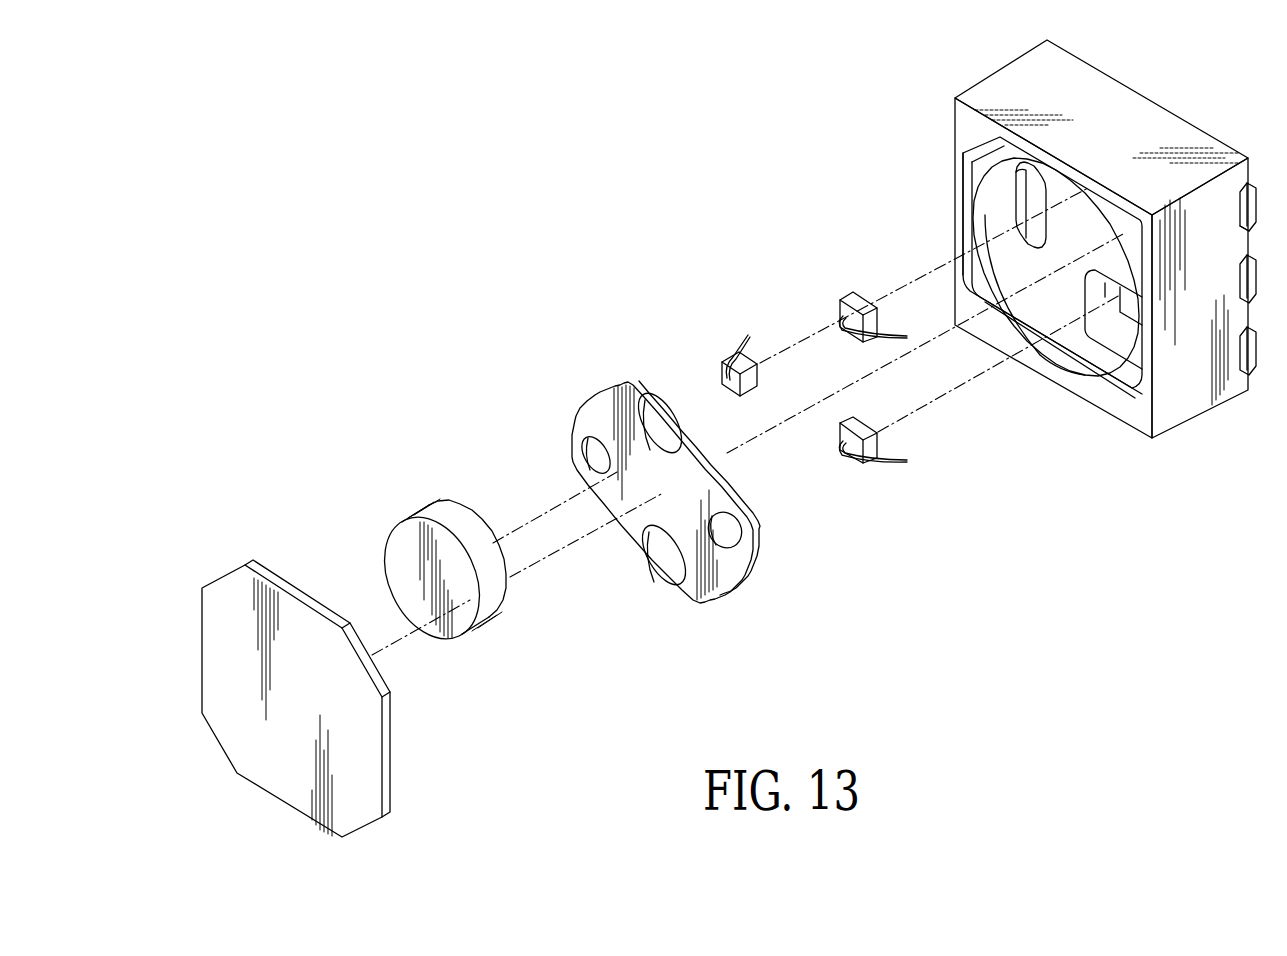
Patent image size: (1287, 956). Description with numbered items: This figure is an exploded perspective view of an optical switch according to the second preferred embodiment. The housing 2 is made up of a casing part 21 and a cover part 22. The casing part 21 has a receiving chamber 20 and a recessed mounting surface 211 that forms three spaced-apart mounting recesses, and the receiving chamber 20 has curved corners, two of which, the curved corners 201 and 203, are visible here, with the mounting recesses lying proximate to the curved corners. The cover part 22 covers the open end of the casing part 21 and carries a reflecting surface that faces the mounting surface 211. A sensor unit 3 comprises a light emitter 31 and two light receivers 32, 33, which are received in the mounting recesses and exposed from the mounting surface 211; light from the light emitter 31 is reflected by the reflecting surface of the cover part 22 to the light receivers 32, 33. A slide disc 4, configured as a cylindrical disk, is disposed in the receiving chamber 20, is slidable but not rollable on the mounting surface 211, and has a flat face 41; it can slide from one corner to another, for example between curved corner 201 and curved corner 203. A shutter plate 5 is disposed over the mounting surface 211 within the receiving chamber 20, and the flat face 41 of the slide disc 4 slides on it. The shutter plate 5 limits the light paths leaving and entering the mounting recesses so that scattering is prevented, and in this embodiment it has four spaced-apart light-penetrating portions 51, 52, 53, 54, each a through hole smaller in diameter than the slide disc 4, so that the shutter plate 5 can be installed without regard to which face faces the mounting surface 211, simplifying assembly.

The housing 2 is at (998, 68).
The casing part 21 is at (1148, 98).
The curved corner 201 is at (988, 188).
The receiving chamber 20 is at (992, 338).
The mounting surface 211 is at (1060, 282).
The curved corner 203 is at (1080, 363).
The sensor unit 3 is at (834, 288).
The light emitter 31 is at (725, 358).
The light receiver 32 is at (862, 297).
The light receiver 33 is at (866, 470).
The shutter plate 5 is at (625, 372).
The light-penetrating portion 51 is at (596, 450).
The light-penetrating portion 52 is at (660, 418).
The light-penetrating portion 53 is at (668, 566).
The light-penetrating portion 54 is at (728, 537).
The slide disc 4 is at (406, 500).
The flat face 41 is at (478, 510).
The cover part 22 is at (300, 588).